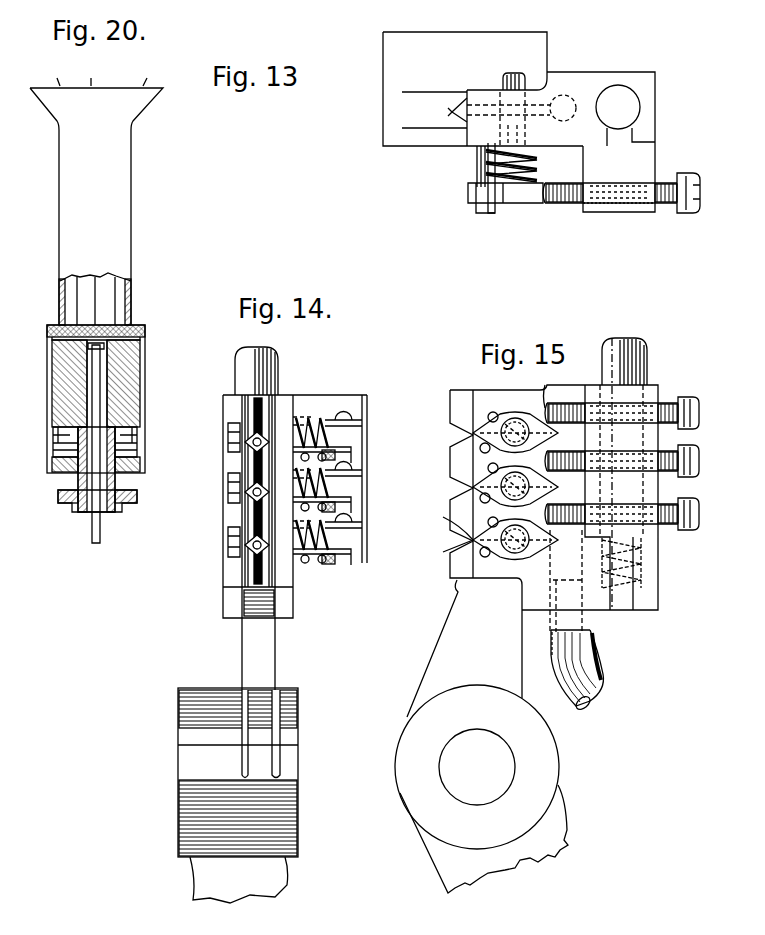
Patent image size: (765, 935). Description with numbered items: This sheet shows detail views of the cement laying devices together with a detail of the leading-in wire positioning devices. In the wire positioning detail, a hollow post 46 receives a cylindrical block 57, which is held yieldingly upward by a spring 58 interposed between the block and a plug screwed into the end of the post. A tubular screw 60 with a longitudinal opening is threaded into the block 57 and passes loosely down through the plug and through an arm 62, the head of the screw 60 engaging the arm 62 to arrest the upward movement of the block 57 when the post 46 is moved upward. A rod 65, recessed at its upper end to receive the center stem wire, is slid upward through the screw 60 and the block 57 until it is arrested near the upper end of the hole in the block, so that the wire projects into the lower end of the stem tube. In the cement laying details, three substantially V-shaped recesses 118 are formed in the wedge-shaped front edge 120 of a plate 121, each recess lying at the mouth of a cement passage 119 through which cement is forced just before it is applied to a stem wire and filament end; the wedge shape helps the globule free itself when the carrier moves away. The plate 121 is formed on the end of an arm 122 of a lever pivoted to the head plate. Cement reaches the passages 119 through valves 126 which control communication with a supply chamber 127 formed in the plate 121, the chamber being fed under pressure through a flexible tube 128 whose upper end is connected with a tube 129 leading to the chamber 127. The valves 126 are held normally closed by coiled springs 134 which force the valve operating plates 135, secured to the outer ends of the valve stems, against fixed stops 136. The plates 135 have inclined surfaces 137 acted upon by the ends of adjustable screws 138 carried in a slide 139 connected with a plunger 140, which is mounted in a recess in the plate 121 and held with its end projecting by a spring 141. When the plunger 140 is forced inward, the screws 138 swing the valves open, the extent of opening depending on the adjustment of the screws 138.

In FIG. 20, the post 46 is at (145, 348).
In FIG. 20, the cylindrical block 57 is at (128, 378).
In FIG. 20, the spring 58 is at (133, 440).
In FIG. 20, the tubular screw 60 is at (115, 483).
In FIG. 20, the arm 62 is at (137, 500).
In FIG. 20, the rod 65 is at (95, 533).
In FIG. 13, the plate 121 is at (570, 78).
In FIG. 13, the supply chamber 127 is at (568, 106).
In FIG. 15, the supply chamber 127 is at (572, 572).
In FIG. 13, the coiled springs 134 is at (495, 163).
In FIG. 14, the coiled springs 134 is at (313, 417).
In FIG. 13, the slide 139 is at (647, 157).
In FIG. 15, the V-shaped recess 118 is at (441, 553).
In FIG. 15, the cement passage 119 is at (442, 524).
In FIG. 15, the wedge-shaped front edge 120 is at (450, 403).
In FIG. 15, the arm 122 is at (458, 648).
In FIG. 15, the valve 126 is at (515, 427).
In FIG. 15, the flexible tube 128 is at (590, 672).
In FIG. 15, the tube 129 is at (543, 620).
In FIG. 15, the valve operating plate 135 is at (492, 425).
In FIG. 15, the fixed stop 136 is at (481, 448).
In FIG. 15, the inclined surface 137 is at (547, 393).
In FIG. 15, the adjustable screws 138 is at (700, 503).
In FIG. 15, the plunger 140 is at (647, 362).
In FIG. 15, the spring 141 is at (643, 570).